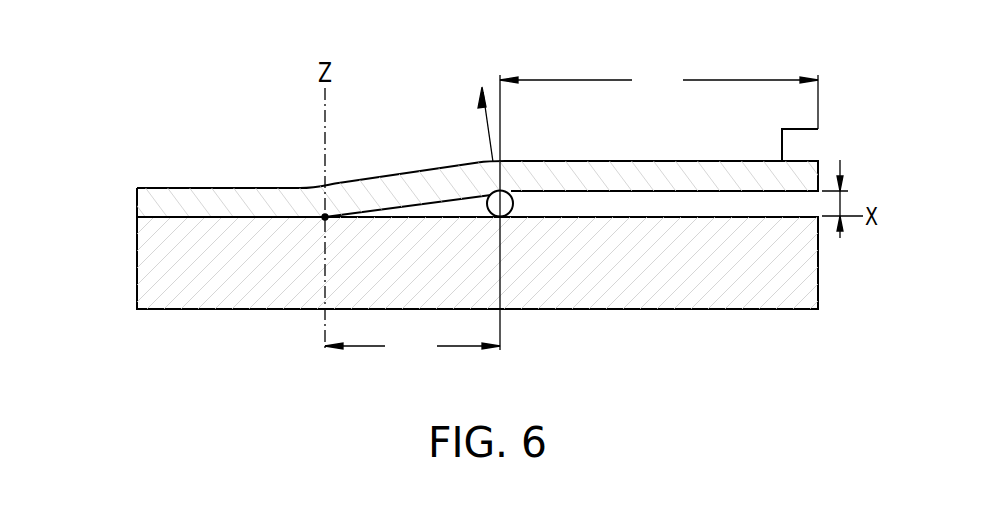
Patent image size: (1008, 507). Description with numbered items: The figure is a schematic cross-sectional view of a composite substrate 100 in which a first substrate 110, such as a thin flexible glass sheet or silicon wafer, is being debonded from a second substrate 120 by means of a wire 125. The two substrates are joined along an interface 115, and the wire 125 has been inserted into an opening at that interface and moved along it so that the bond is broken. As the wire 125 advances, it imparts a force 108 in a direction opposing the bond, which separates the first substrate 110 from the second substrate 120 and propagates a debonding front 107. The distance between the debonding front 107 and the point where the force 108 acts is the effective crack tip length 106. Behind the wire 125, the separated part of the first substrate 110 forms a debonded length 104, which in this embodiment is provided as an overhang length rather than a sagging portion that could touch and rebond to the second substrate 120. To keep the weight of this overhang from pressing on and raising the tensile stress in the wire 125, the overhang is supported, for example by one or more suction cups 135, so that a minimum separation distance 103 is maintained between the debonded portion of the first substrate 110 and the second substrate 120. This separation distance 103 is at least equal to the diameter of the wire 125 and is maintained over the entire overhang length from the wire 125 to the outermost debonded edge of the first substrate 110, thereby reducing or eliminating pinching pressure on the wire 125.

The composite substrate 100 is at (207, 108).
The minimum separation distance 103 is at (859, 199).
The debonded length 104 is at (659, 97).
The effective crack tip length 106 is at (412, 346).
The debonding front 107 is at (327, 214).
The force 108 is at (486, 120).
The first substrate 110 is at (265, 194).
The interface 115 is at (137, 217).
The second substrate 120 is at (232, 295).
The wire 125 is at (496, 196).
The suction cup 135 is at (813, 141).